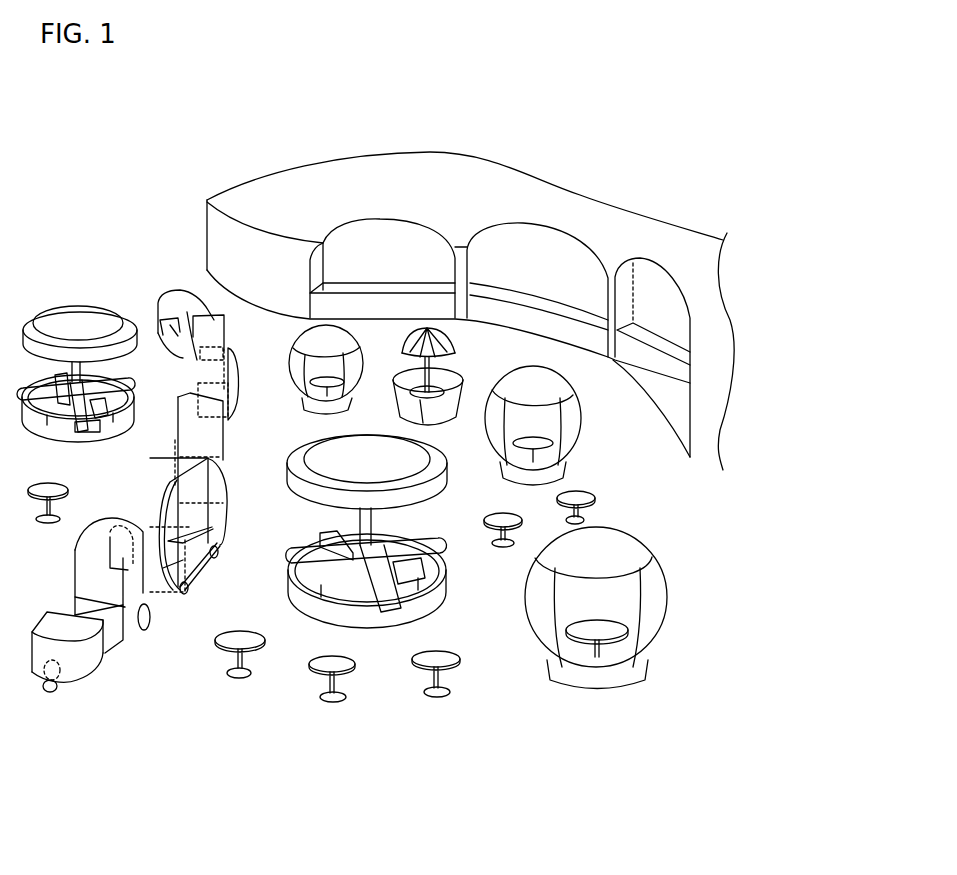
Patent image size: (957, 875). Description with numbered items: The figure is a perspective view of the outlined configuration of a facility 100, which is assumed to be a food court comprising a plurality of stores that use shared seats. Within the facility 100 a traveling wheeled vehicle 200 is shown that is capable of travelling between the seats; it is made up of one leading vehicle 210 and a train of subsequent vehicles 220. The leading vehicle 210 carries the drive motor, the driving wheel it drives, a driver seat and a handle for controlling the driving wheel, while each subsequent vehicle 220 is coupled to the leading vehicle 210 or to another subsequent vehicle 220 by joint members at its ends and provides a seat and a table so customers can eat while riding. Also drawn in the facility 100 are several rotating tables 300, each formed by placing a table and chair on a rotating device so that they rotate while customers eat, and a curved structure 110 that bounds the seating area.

The facility 100 is at (440, 600).
The curved pavilion structure 110 is at (450, 167).
The traveling wheeled vehicle 200 is at (161, 515).
The leading vehicle 210 is at (88, 667).
The subsequent vehicle 220 is at (187, 300).
The rotating table 300 is at (88, 317).